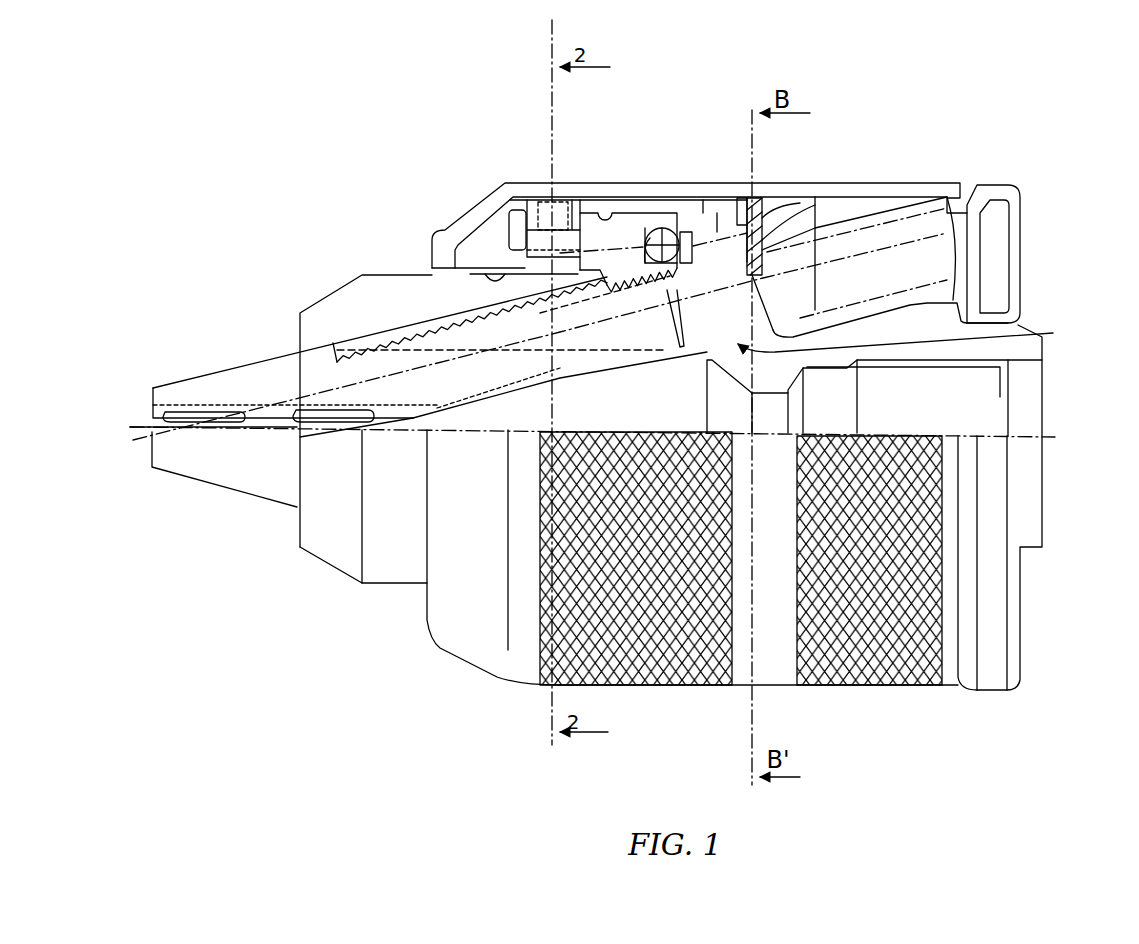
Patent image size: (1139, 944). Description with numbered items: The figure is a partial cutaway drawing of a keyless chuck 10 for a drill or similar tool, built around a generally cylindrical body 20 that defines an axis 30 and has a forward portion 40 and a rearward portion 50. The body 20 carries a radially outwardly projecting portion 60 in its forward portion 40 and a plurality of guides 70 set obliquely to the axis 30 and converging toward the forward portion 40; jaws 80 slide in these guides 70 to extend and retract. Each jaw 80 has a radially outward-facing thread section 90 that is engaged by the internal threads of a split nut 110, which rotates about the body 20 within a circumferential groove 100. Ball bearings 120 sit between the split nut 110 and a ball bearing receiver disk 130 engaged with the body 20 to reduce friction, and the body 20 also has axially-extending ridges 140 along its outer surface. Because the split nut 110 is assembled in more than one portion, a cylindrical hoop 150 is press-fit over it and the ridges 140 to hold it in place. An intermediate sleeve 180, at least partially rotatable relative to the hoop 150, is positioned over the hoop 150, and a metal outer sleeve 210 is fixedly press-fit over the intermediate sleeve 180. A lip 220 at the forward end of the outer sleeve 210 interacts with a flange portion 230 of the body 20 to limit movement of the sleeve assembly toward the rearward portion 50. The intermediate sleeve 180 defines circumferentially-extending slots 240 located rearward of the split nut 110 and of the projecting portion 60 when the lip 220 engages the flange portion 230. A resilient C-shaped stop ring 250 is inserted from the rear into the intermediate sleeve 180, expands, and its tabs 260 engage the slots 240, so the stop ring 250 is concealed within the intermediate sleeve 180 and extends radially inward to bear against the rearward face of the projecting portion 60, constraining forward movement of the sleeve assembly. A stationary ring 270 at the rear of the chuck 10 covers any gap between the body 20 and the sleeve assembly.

The keyless chuck 10 is at (290, 134).
The body 20 is at (308, 293).
The axis 30 is at (1050, 437).
The forward portion 40 is at (393, 555).
The rearward portion 50 is at (1020, 323).
The radially outwardly projecting portion 60 is at (741, 238).
The guides 70 is at (1053, 333).
The jaws 80 is at (203, 392).
The thread section 90 is at (392, 340).
The circumferential groove 100 is at (598, 281).
The split nut 110 is at (603, 222).
The ball bearings 120 is at (643, 232).
The ball bearing receiver disk 130 is at (680, 230).
The axially-extending ridges 140 is at (497, 263).
The cylindrical hoop 150 is at (713, 235).
The intermediate sleeve 180 is at (507, 197).
The outer sleeve 210 is at (943, 190).
The lip 220 is at (417, 268).
The flange portion 230 is at (478, 255).
The circumferentially-extending slots 240 is at (772, 200).
The stop ring 250 is at (817, 237).
The tabs 260 is at (797, 207).
The stationary ring 270 is at (1020, 223).